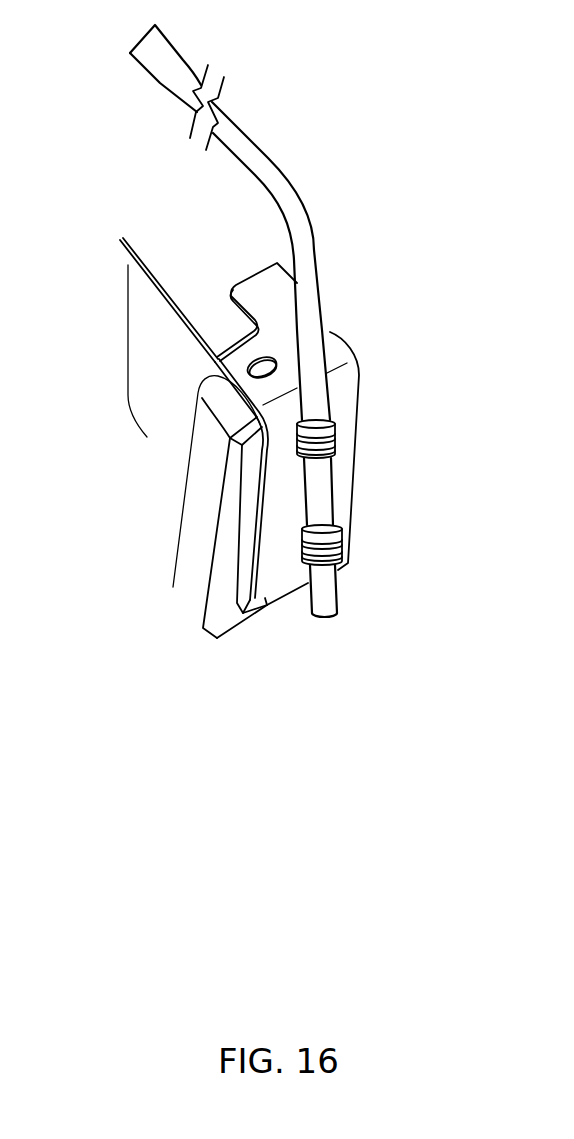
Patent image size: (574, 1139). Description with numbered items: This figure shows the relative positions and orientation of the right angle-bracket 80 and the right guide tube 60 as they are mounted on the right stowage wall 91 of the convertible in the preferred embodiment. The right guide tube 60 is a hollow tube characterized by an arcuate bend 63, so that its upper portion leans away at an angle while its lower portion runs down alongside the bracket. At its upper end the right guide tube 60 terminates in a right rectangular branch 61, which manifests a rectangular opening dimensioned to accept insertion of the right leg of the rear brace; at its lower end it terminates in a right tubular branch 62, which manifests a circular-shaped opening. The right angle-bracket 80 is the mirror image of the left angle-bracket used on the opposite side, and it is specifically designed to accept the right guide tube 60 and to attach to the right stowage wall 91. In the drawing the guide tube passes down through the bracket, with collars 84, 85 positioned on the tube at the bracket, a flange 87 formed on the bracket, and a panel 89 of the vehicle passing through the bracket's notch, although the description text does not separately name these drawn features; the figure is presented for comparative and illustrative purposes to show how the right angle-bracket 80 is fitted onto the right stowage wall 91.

The right guide tube 60 is at (315, 352).
The right rectangular branch 61 is at (128, 65).
The right tubular branch 62 is at (340, 603).
The arcuate bend 63 is at (303, 203).
The right angle-bracket 80 is at (375, 382).
The upper clip 84 is at (337, 440).
The lower clip 85 is at (338, 553).
The flange 87 is at (277, 535).
The panel 89 is at (245, 363).
The right stowage wall 91 is at (247, 612).